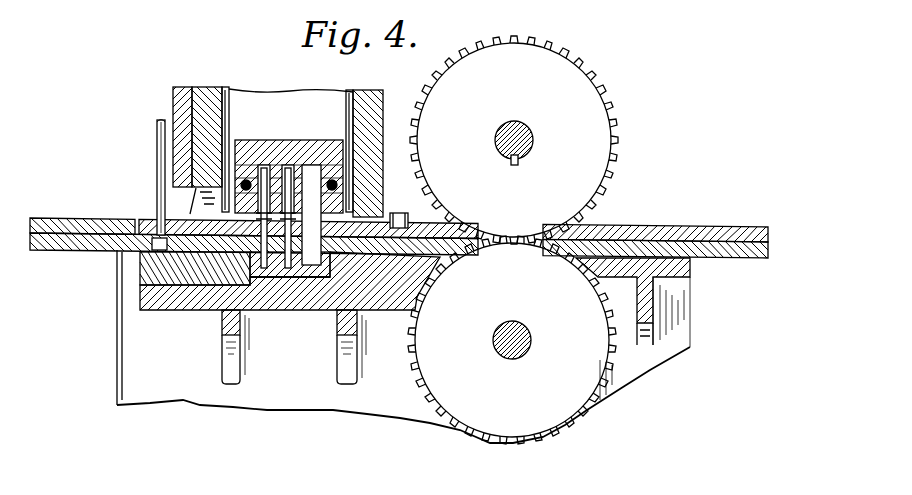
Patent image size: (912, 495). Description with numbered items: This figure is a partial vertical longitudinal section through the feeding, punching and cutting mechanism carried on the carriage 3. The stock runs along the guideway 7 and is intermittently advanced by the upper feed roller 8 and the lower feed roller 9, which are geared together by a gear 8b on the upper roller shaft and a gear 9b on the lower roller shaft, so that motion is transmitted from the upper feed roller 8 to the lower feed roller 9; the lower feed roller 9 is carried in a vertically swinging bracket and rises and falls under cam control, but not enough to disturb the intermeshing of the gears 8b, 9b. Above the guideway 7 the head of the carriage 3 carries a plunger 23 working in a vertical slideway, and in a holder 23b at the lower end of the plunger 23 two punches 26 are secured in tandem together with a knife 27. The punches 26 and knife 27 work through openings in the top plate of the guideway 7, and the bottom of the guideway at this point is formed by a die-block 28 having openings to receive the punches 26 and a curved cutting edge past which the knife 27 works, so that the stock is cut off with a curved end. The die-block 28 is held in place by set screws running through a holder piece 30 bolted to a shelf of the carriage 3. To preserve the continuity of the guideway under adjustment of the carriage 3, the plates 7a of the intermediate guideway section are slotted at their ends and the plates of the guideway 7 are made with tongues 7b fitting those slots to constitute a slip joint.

The carriage 3 is at (702, 336).
The guideway 7 is at (712, 221).
The plates of intermediate guideway section 7a is at (38, 213).
The tongues 7b is at (147, 213).
The upper feed roller 8 is at (606, 104).
The gear 8b is at (612, 134).
The lower feed roller 9 is at (572, 404).
The gear 9b is at (614, 358).
The plunger 23 is at (284, 92).
The holder 23b is at (309, 142).
The punches 26 is at (290, 165).
The knife 27 is at (313, 216).
The die-block 28 is at (250, 256).
The holder piece 30 is at (250, 277).